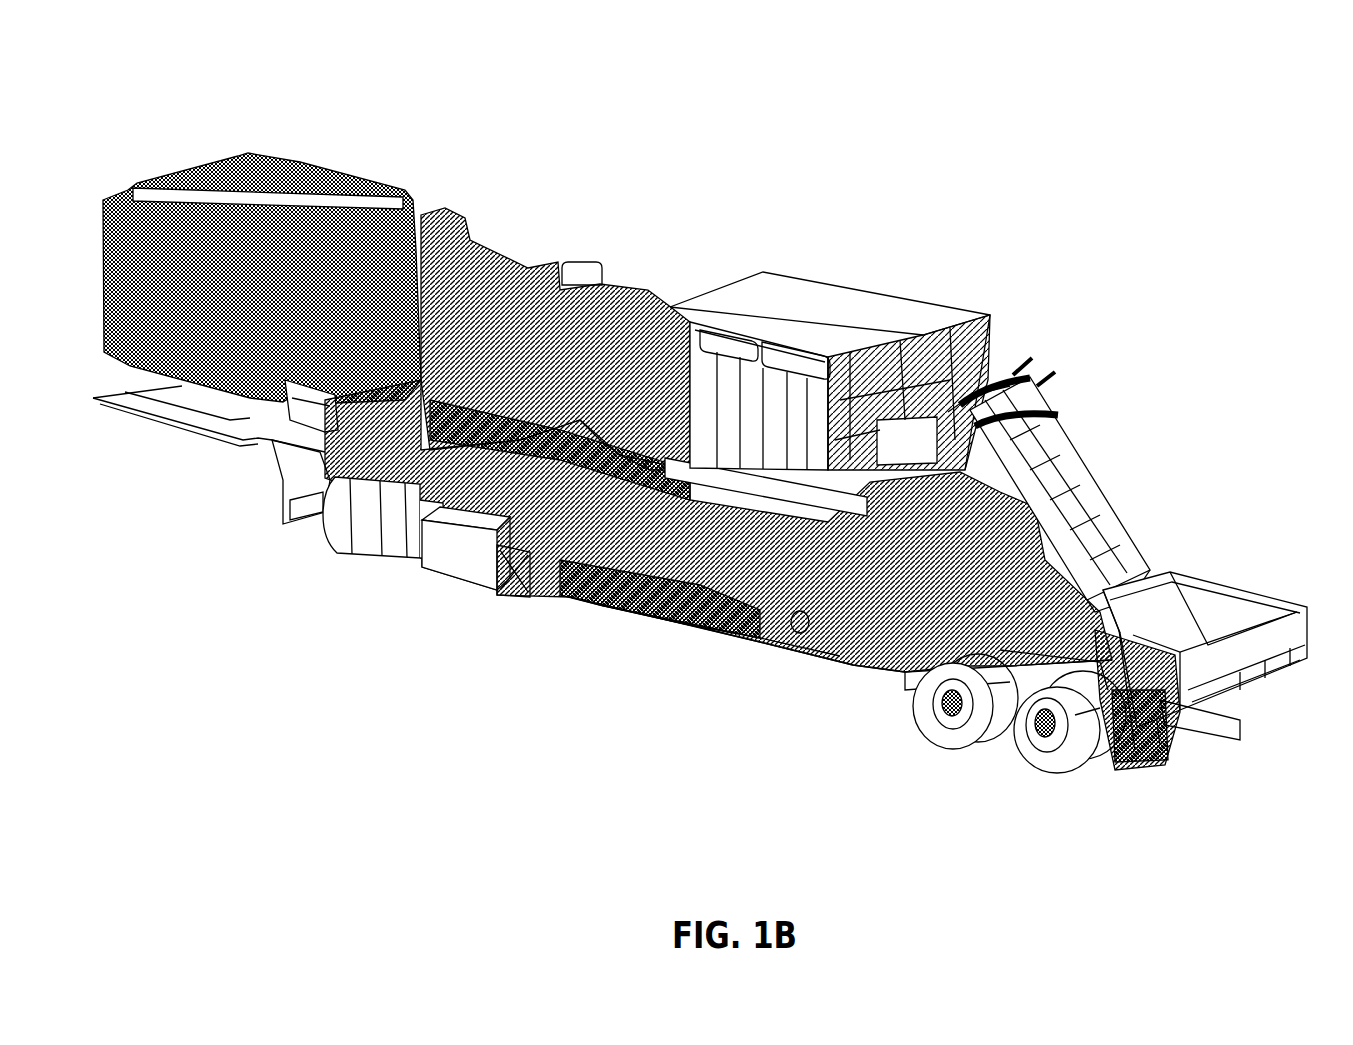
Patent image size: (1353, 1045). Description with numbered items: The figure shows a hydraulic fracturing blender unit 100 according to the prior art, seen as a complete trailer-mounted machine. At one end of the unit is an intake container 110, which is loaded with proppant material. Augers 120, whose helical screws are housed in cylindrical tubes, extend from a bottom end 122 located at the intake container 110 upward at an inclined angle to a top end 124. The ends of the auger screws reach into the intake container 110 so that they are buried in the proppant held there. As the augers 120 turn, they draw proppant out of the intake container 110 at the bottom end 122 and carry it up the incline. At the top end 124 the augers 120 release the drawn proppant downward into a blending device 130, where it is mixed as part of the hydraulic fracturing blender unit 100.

The hydraulic fracturing blender unit 100 is at (700, 451).
The intake container 110 is at (1223, 590).
The augers 120 is at (1092, 477).
The bottom end 122 is at (1153, 750).
The top end 124 is at (1027, 437).
The blending device 130 is at (963, 623).